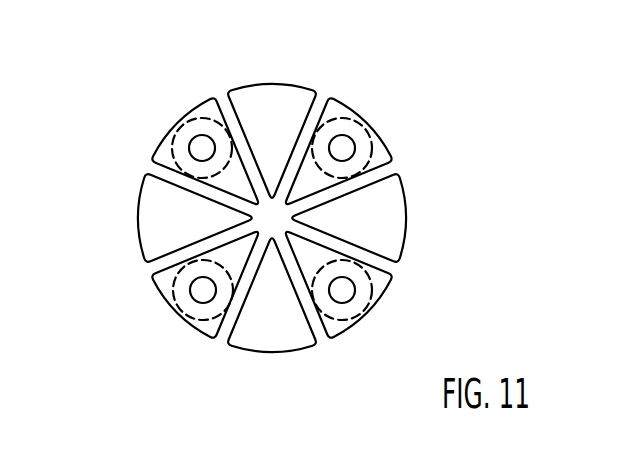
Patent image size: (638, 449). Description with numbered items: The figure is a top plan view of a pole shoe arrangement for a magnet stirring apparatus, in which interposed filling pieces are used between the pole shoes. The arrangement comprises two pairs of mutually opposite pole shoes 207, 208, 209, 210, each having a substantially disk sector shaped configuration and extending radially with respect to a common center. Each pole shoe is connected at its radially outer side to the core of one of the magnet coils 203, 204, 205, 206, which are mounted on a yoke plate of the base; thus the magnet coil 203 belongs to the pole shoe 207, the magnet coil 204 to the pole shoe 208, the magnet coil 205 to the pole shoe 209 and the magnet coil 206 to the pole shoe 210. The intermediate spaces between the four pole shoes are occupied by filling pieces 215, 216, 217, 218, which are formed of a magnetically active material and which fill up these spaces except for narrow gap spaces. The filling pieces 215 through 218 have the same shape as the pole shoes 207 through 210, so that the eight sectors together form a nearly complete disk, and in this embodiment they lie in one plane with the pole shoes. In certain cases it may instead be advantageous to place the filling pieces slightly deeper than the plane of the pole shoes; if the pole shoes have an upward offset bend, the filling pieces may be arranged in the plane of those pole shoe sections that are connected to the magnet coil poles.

The magnet coil 203 is at (173, 289).
The magnet coil 204 is at (364, 296).
The magnet coil 205 is at (363, 135).
The magnet coil 206 is at (199, 124).
The pole shoe 207 is at (208, 328).
The pole shoe 208 is at (337, 327).
The pole shoe 209 is at (336, 108).
The pole shoe 210 is at (160, 153).
The filling piece 215 is at (277, 340).
The filling piece 216 is at (390, 218).
The filling piece 217 is at (275, 108).
The filling piece 218 is at (152, 220).